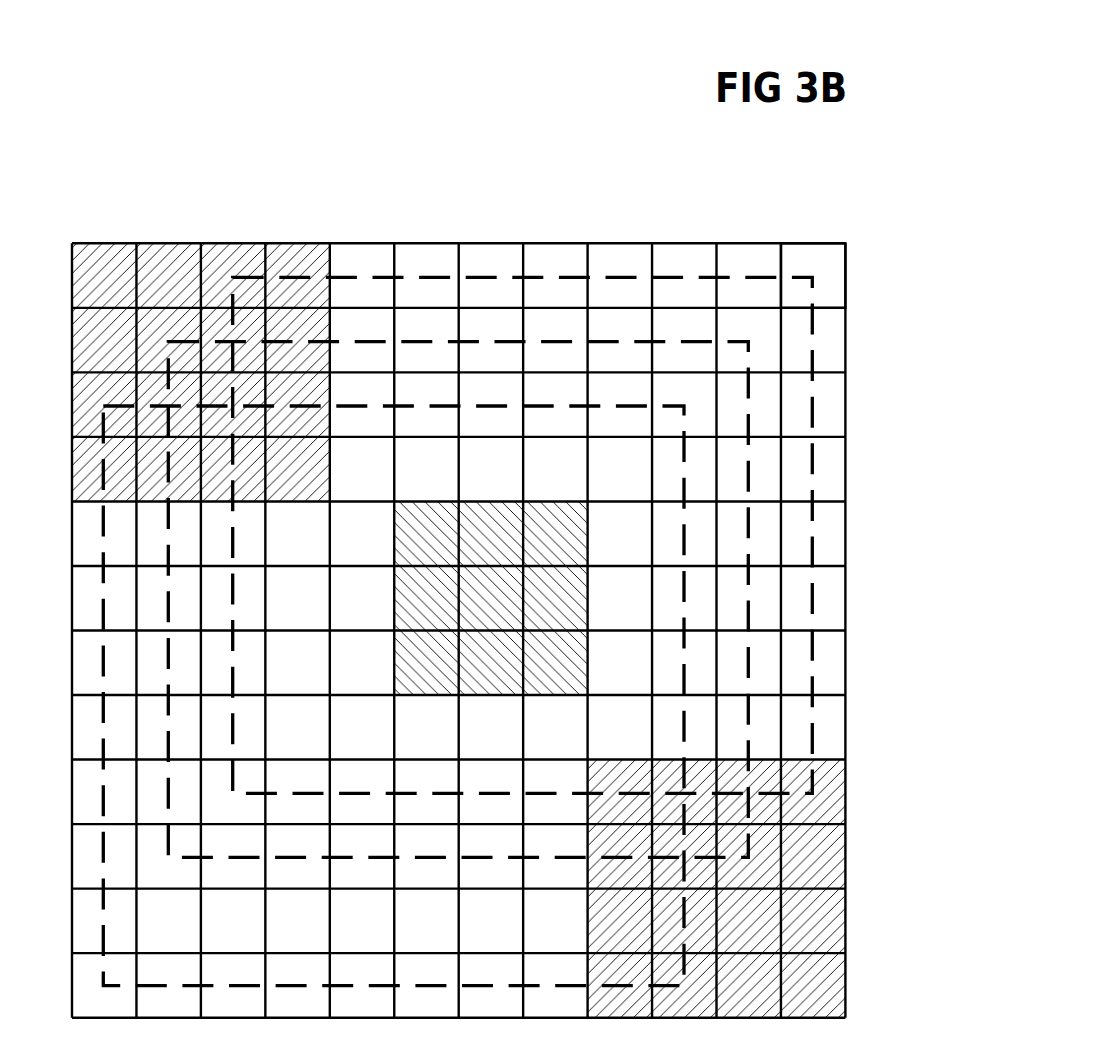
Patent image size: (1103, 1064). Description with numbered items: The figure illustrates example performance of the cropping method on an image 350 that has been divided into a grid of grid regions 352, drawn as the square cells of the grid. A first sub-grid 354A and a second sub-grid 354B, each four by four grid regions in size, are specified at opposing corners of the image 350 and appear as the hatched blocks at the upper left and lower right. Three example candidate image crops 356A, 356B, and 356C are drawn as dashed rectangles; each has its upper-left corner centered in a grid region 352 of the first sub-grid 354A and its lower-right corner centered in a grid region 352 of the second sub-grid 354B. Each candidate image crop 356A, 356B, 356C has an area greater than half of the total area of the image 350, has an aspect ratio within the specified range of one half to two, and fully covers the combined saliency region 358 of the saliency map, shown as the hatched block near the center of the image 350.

The image 350 is at (577, 199).
The grid region 352 is at (836, 262).
The first sub-grid 354A is at (65, 252).
The second sub-grid 354B is at (870, 922).
The candidate image crop 356A is at (428, 987).
The candidate image crop 356B is at (167, 795).
The candidate image crop 356C is at (813, 733).
The combined saliency region 358 is at (553, 696).